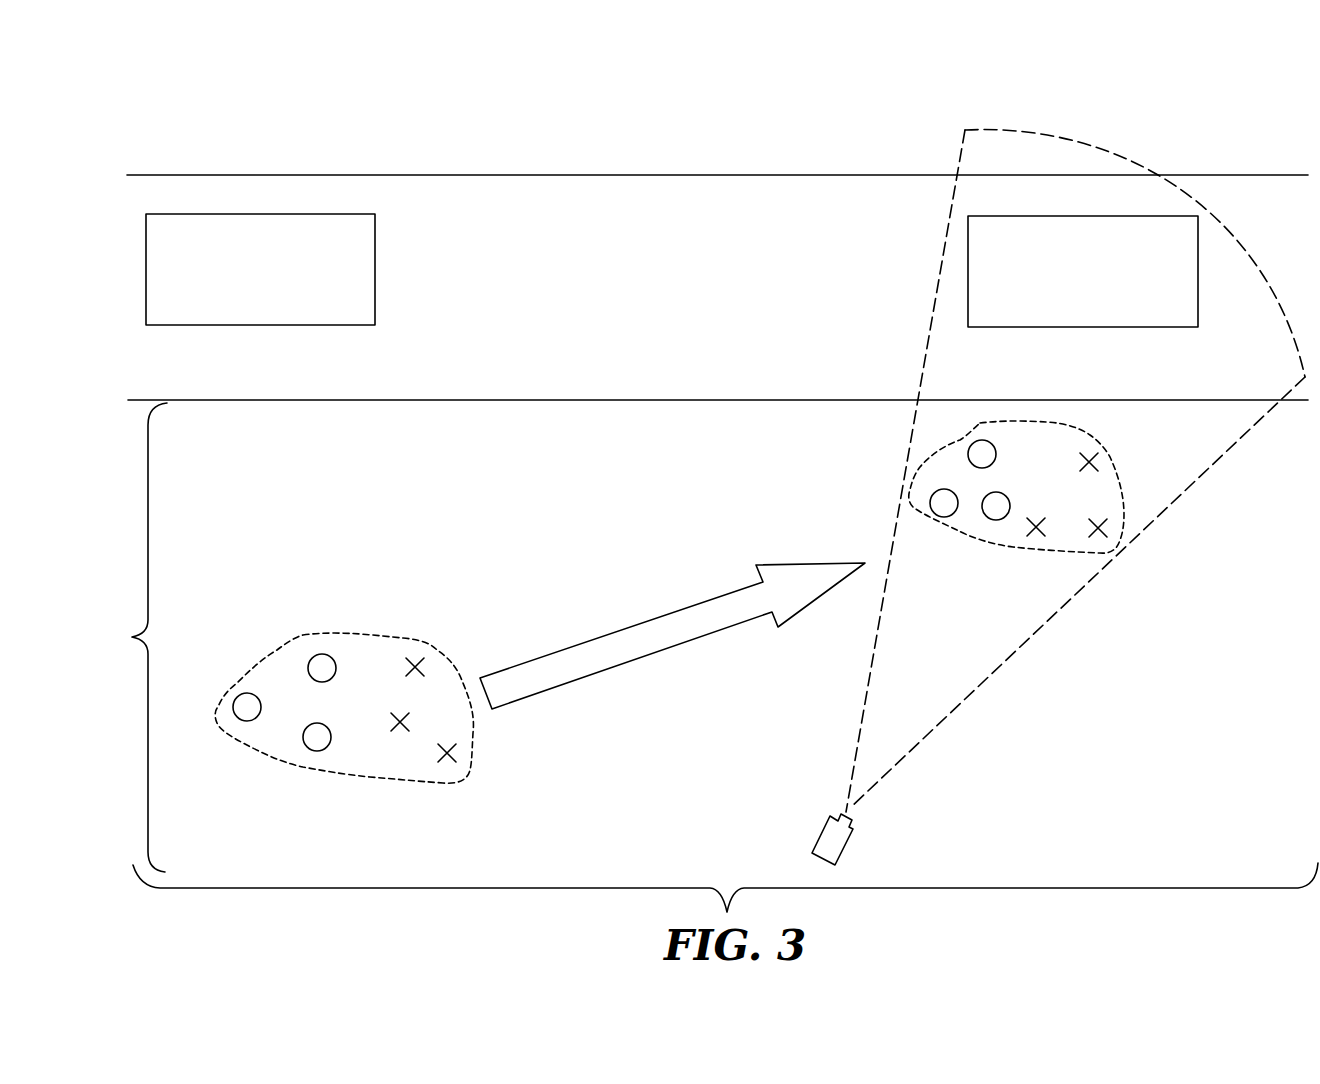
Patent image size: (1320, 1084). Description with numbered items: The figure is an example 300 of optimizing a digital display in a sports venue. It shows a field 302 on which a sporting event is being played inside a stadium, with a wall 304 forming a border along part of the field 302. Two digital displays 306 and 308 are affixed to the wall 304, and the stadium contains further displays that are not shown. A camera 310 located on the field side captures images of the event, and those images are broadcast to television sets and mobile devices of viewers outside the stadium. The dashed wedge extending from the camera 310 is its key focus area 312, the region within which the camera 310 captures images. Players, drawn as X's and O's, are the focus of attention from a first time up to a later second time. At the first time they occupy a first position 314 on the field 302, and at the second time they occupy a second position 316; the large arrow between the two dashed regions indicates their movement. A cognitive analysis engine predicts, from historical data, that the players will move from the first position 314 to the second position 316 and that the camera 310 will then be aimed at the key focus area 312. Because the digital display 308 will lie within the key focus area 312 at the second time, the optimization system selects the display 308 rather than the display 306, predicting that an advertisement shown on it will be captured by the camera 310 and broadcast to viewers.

The example 300 is at (803, 82).
The field 302 is at (701, 657).
The wall 304 is at (730, 174).
The digital display 306 is at (377, 247).
The digital display 308 is at (1193, 303).
The camera 310 is at (845, 838).
The key focus area 312 is at (1188, 473).
The first position 314 is at (453, 663).
The second position 316 is at (1120, 486).